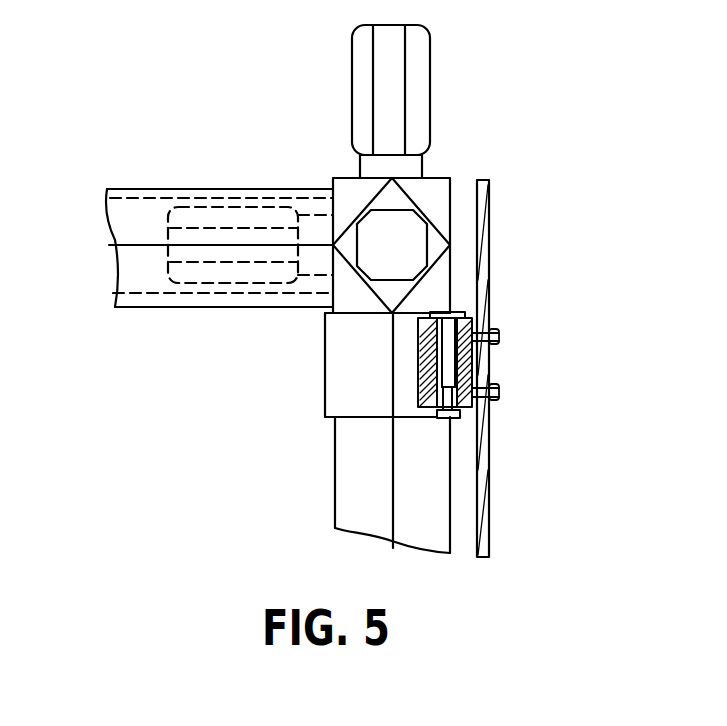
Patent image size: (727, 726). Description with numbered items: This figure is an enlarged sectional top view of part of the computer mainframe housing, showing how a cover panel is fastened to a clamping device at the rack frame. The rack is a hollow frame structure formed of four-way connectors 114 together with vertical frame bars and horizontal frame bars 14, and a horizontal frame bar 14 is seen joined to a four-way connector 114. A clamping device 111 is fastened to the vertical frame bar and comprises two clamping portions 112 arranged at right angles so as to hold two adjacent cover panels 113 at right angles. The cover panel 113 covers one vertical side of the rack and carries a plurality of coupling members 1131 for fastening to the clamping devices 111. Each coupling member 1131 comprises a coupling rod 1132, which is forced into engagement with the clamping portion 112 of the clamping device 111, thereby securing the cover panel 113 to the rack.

The horizontal frame bar 14 is at (147, 218).
The clamping device 111 is at (333, 376).
The clamping portion 112 is at (418, 335).
The cover panel 113 is at (481, 256).
The coupling member 1131 is at (480, 308).
The coupling rod 1132 is at (418, 378).
The four-way connector 114 is at (440, 185).